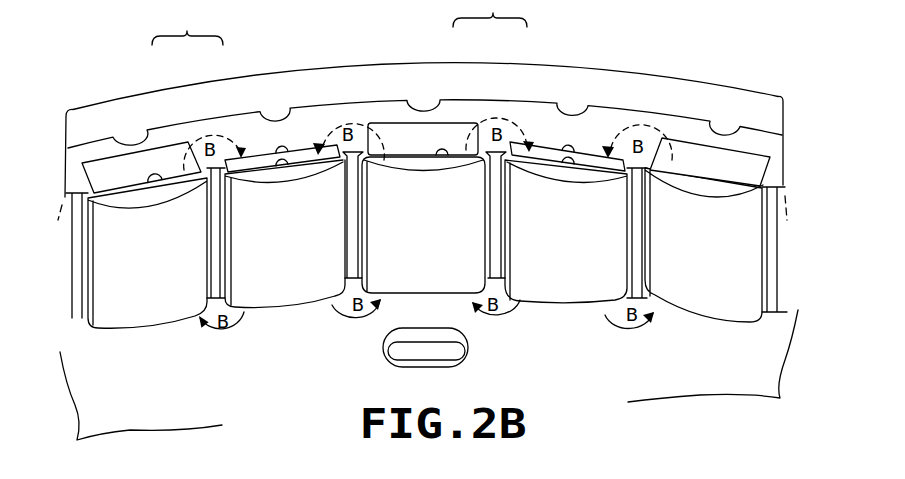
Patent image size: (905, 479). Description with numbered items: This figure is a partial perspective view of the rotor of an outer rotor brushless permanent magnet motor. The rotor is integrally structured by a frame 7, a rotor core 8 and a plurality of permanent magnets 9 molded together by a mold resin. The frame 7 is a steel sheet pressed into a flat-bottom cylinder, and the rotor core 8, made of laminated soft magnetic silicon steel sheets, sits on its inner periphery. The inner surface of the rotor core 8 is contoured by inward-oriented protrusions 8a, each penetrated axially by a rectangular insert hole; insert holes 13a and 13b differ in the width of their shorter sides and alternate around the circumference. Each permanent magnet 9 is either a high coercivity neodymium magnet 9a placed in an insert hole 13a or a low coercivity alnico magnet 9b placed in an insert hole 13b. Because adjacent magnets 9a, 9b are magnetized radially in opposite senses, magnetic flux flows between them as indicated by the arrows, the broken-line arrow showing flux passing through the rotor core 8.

The frame 7 is at (575, 66).
The rotor core 8 is at (650, 112).
The protrusion 8a is at (133, 283).
The permanent magnet 9 is at (339, 22).
The neodymium magnet 9a is at (252, 153).
The alnico magnet 9b is at (163, 145).
The insert hole 13a is at (291, 163).
The insert hole 13b is at (160, 188).